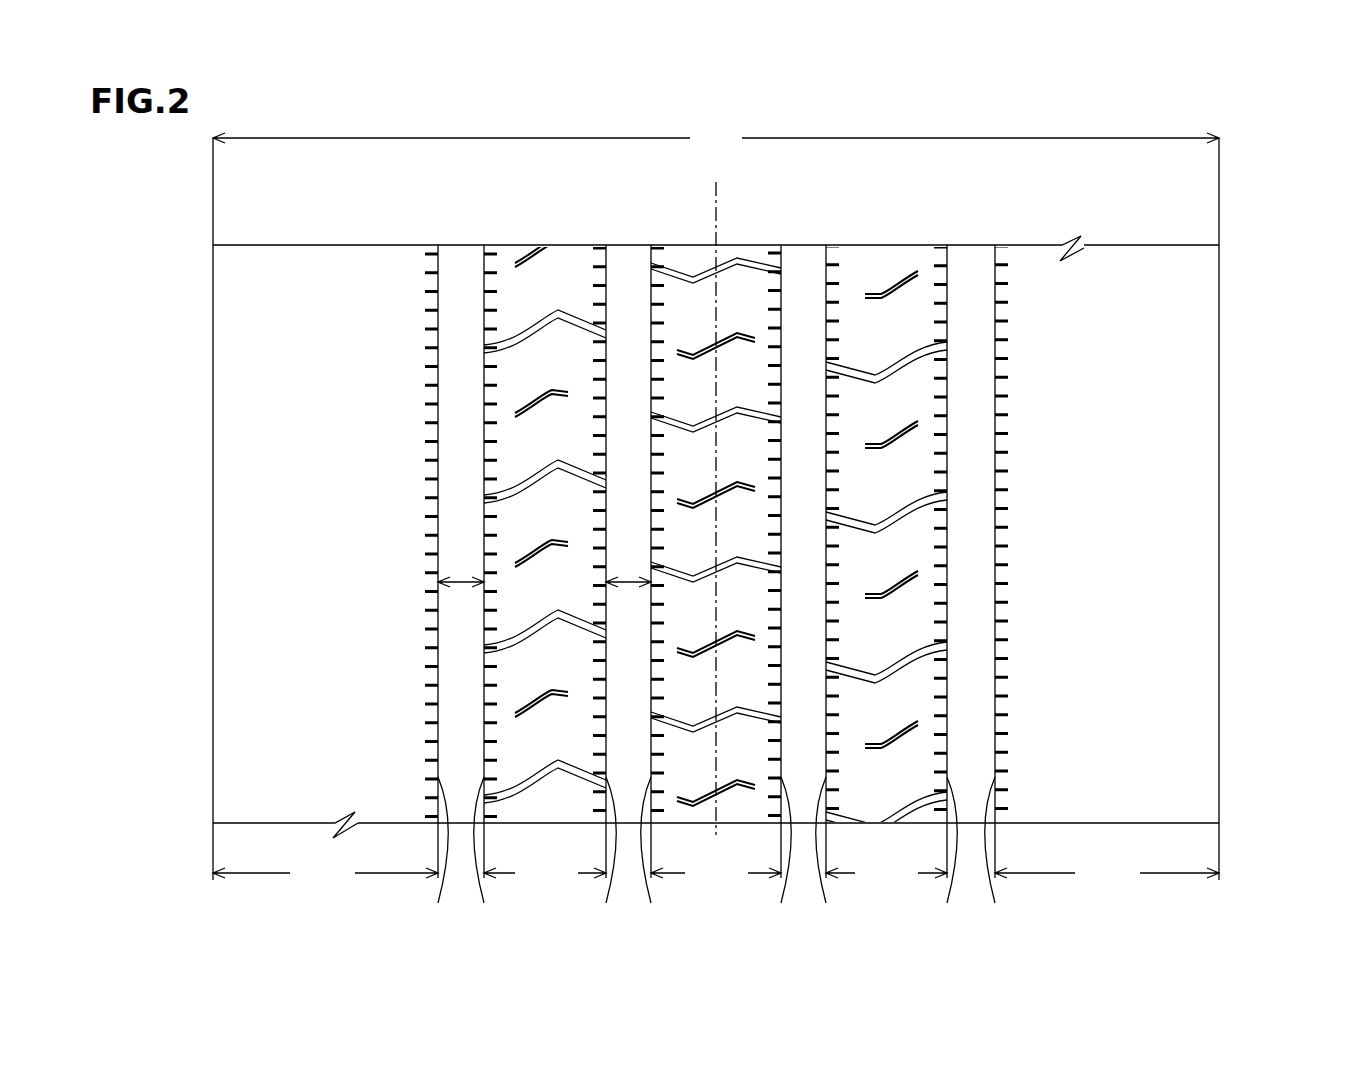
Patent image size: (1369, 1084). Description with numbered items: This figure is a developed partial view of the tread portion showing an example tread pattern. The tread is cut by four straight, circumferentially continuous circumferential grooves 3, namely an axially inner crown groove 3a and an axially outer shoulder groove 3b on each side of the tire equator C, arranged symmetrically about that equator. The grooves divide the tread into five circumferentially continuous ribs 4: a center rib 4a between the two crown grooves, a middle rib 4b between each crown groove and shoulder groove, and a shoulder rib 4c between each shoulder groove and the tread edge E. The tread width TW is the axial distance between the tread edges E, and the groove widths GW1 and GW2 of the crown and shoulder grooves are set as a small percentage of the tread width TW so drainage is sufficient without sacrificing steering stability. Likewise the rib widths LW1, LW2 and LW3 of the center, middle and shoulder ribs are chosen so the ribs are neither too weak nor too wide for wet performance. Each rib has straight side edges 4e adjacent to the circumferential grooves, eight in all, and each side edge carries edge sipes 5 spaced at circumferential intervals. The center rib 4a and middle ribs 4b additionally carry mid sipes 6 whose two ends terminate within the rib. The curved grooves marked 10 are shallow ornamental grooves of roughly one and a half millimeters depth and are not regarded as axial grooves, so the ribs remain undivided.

The circumferential groove 3 is at (695, 527).
The crown groove 3a is at (628, 266).
The shoulder groove 3b is at (452, 266).
The rib 4 is at (715, 507).
The center rib 4a is at (693, 265).
The middle rib 4b is at (528, 266).
The shoulder rib 4c is at (256, 547).
The side edge 4e is at (718, 855).
The edge sipe 5 is at (716, 540).
The mid sipe 6 is at (672, 353).
The ornamental groove 10 is at (913, 355).
The tread edge E is at (212, 296).
The tire equator C is at (716, 494).
The tread width TW is at (716, 139).
The crown groove width GW1 is at (630, 586).
The shoulder groove width GW2 is at (461, 585).
The center rib width LW1 is at (716, 875).
The middle rib width LW2 is at (715, 875).
The shoulder rib width LW3 is at (716, 875).